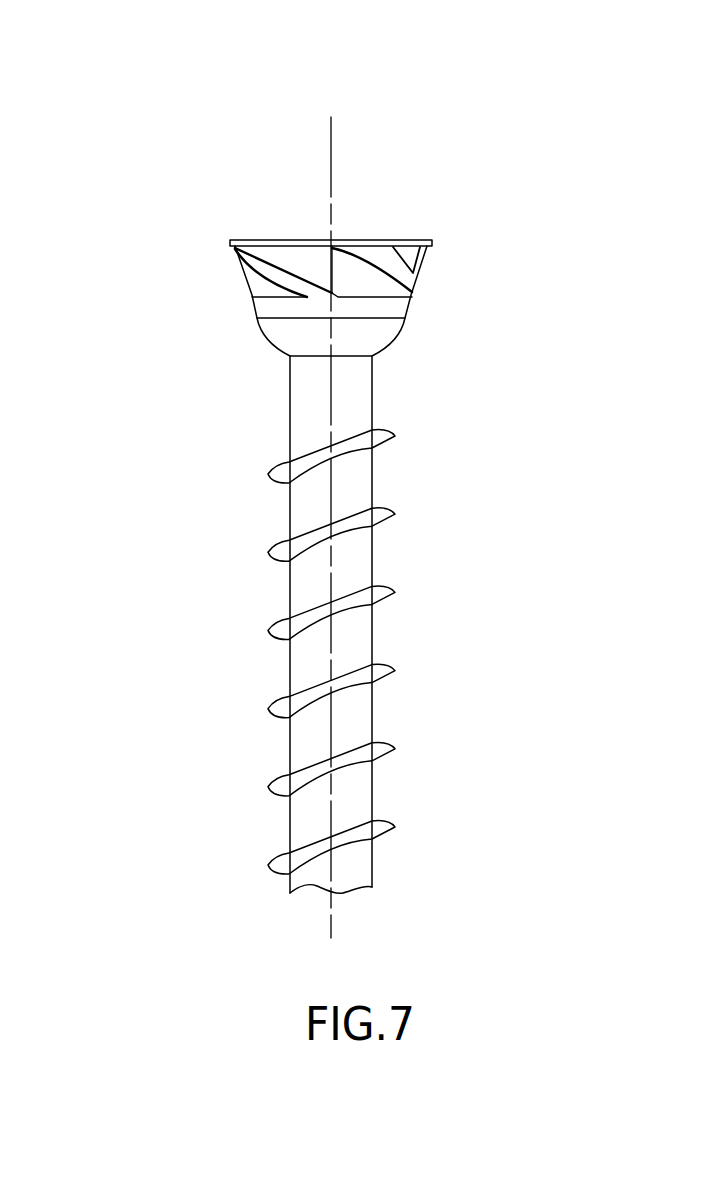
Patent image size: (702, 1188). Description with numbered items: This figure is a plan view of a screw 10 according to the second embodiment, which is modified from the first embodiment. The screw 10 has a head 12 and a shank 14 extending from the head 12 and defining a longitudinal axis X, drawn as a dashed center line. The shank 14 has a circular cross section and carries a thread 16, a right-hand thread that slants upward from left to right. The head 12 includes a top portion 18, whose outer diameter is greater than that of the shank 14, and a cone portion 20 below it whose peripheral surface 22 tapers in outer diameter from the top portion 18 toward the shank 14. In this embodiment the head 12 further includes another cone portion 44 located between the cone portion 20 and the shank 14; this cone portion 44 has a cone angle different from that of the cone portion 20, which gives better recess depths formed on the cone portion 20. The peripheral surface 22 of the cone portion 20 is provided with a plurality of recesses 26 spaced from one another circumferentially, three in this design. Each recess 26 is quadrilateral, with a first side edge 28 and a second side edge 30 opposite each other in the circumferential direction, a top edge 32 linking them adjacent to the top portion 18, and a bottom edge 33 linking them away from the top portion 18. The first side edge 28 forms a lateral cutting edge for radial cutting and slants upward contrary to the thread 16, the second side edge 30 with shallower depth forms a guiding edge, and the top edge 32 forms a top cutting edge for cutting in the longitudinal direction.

The screw 10 is at (307, 484).
The head 12 is at (348, 238).
The shank 14 is at (396, 624).
The thread 16 is at (380, 740).
The top portion 18 is at (245, 240).
The cone portion 20 is at (268, 310).
The peripheral surface 22 is at (402, 262).
The recess 26 is at (317, 261).
The first side edge 28 is at (370, 255).
The second side edge 30 is at (332, 293).
The top edge 32 is at (270, 246).
The bottom edge 33 is at (372, 298).
The cone portion 44 is at (373, 343).
The longitudinal axis X is at (330, 127).